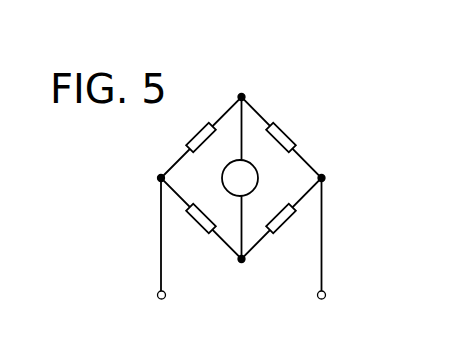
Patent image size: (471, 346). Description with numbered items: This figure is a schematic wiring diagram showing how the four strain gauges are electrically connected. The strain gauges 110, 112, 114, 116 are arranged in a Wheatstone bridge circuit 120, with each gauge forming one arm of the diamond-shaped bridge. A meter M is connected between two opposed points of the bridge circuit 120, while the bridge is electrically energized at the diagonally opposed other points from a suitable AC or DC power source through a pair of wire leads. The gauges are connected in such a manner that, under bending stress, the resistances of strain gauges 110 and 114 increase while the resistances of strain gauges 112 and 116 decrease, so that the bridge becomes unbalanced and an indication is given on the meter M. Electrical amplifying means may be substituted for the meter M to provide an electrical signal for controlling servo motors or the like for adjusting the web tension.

The Wheatstone bridge circuit 120 is at (262, 98).
The strain gauge 110 is at (188, 142).
The strain gauge 112 is at (283, 129).
The strain gauge 114 is at (284, 226).
The strain gauge 116 is at (203, 226).